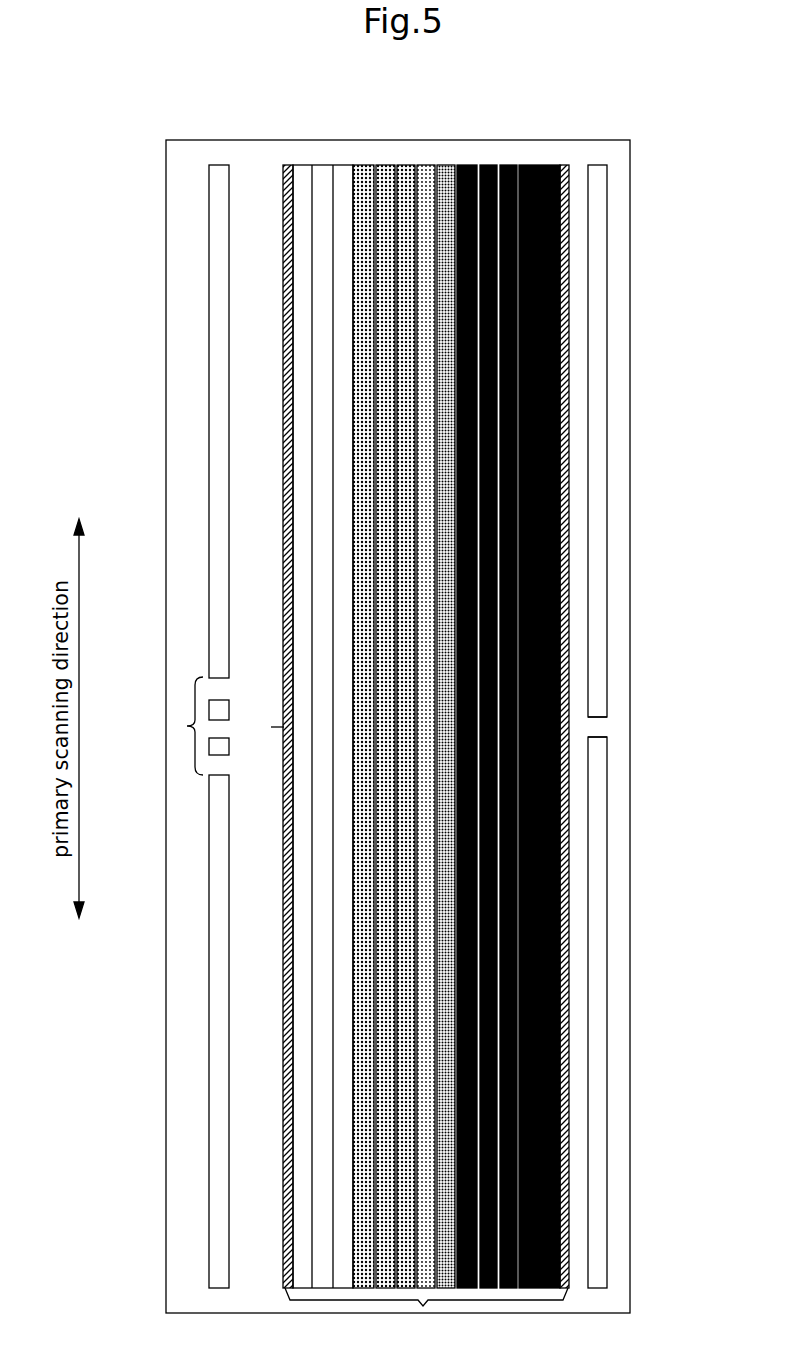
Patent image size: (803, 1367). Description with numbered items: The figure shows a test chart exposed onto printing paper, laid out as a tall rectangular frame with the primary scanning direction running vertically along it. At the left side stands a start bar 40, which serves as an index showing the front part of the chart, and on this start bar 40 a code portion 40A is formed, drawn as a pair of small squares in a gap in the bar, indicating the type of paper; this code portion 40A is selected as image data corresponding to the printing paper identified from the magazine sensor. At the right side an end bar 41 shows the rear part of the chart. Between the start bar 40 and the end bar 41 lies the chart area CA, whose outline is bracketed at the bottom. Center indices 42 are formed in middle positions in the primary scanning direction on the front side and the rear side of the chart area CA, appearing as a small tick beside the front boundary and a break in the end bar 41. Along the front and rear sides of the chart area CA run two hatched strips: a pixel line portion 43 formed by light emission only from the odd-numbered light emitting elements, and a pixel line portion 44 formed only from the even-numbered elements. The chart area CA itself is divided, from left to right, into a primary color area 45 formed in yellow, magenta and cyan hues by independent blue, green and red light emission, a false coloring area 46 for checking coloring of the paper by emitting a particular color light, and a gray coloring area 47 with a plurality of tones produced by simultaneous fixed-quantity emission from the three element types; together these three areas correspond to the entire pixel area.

The start bar 40 is at (209, 490).
The code portion 40A is at (187, 726).
The end bar 41 is at (607, 557).
The center indices 42 is at (278, 727).
The pixel line portion 43 is at (283, 423).
The pixel line portion 44 is at (569, 410).
The primary color area 45 is at (354, 165).
The false coloring area 46 is at (415, 165).
The gray coloring area 47 is at (560, 165).
The chart area CA is at (423, 1306).